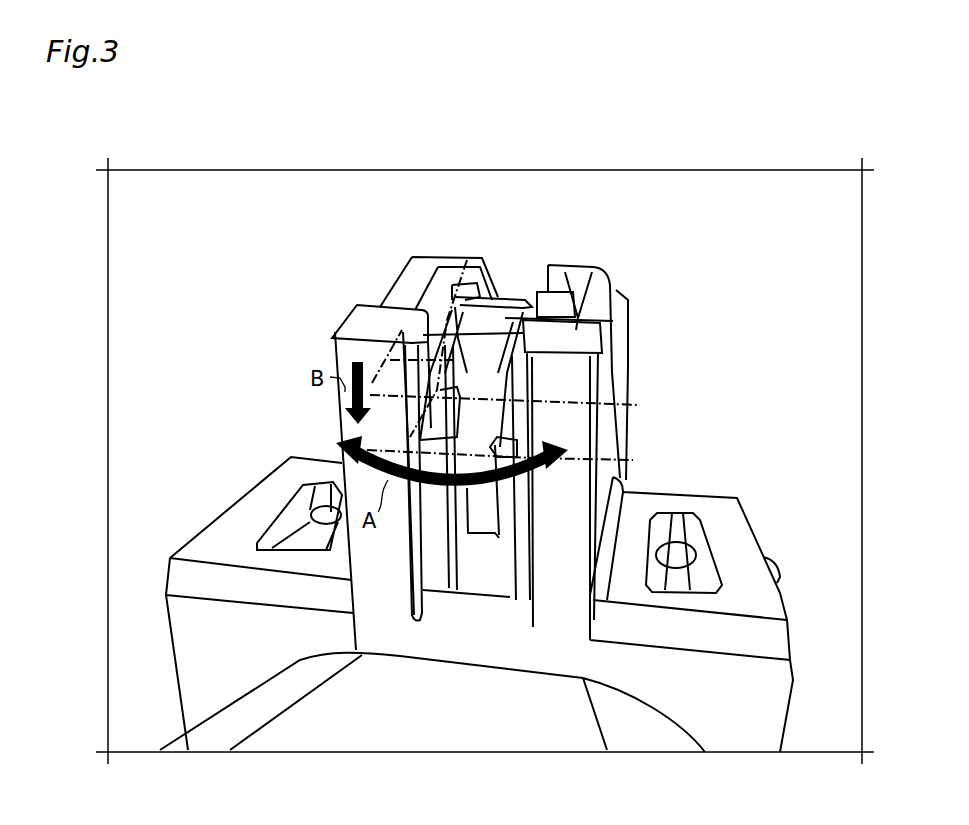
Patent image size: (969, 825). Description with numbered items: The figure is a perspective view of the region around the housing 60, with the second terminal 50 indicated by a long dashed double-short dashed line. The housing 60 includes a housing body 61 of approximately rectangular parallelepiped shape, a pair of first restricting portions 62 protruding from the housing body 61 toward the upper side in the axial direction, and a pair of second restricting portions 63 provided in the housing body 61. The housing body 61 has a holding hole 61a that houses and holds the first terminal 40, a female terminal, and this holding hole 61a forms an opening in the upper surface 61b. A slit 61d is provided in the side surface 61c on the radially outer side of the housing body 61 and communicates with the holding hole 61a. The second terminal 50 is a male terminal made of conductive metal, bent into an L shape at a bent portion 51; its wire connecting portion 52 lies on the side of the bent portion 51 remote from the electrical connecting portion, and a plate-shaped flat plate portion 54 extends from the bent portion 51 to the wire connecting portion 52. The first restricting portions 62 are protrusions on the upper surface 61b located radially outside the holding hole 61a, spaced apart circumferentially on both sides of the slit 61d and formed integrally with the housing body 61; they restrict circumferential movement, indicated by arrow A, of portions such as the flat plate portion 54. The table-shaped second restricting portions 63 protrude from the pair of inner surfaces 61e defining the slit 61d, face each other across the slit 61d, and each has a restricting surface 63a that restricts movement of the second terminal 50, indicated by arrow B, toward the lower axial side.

The first terminal 40 is at (563, 292).
The second terminal 50 is at (472, 285).
The bent portion 51 is at (507, 300).
The wire connecting portion 52 is at (500, 400).
The flat plate portion 54 is at (575, 320).
The housing 60 is at (518, 204).
The housing body 61 is at (488, 245).
The holding hole 61a is at (463, 290).
The upper surface 61b is at (613, 297).
The side surface 61c is at (375, 620).
The slit 61d is at (476, 548).
The inner surfaces 61e is at (393, 363).
The first restricting portions 62 is at (362, 320).
The second restricting portions 63 is at (373, 572).
The restricting surface 63a is at (430, 423).